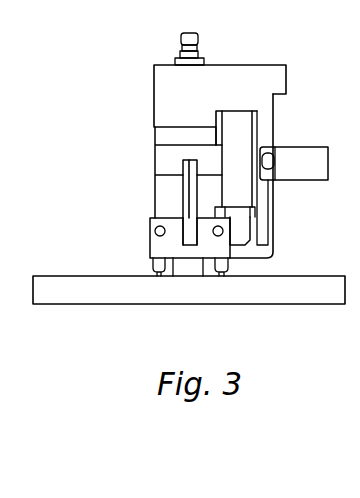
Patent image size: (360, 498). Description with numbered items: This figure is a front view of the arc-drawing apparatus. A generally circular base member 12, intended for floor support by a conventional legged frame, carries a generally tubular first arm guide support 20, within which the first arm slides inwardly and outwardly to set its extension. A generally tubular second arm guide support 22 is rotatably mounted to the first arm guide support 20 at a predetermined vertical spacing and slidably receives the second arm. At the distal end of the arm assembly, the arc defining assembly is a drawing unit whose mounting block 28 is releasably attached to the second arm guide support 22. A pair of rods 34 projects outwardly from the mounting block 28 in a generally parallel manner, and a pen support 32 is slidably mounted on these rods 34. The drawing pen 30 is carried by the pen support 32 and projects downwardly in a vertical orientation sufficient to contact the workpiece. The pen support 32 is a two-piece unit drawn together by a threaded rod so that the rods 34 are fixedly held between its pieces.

The base member 12 is at (63, 287).
The first arm guide support 20 is at (263, 234).
The second arm guide support 22 is at (262, 77).
The mounting block 28 is at (237, 190).
The drawing pen 30 is at (189, 163).
The pen support 32 is at (165, 247).
The rods 34 is at (155, 231).